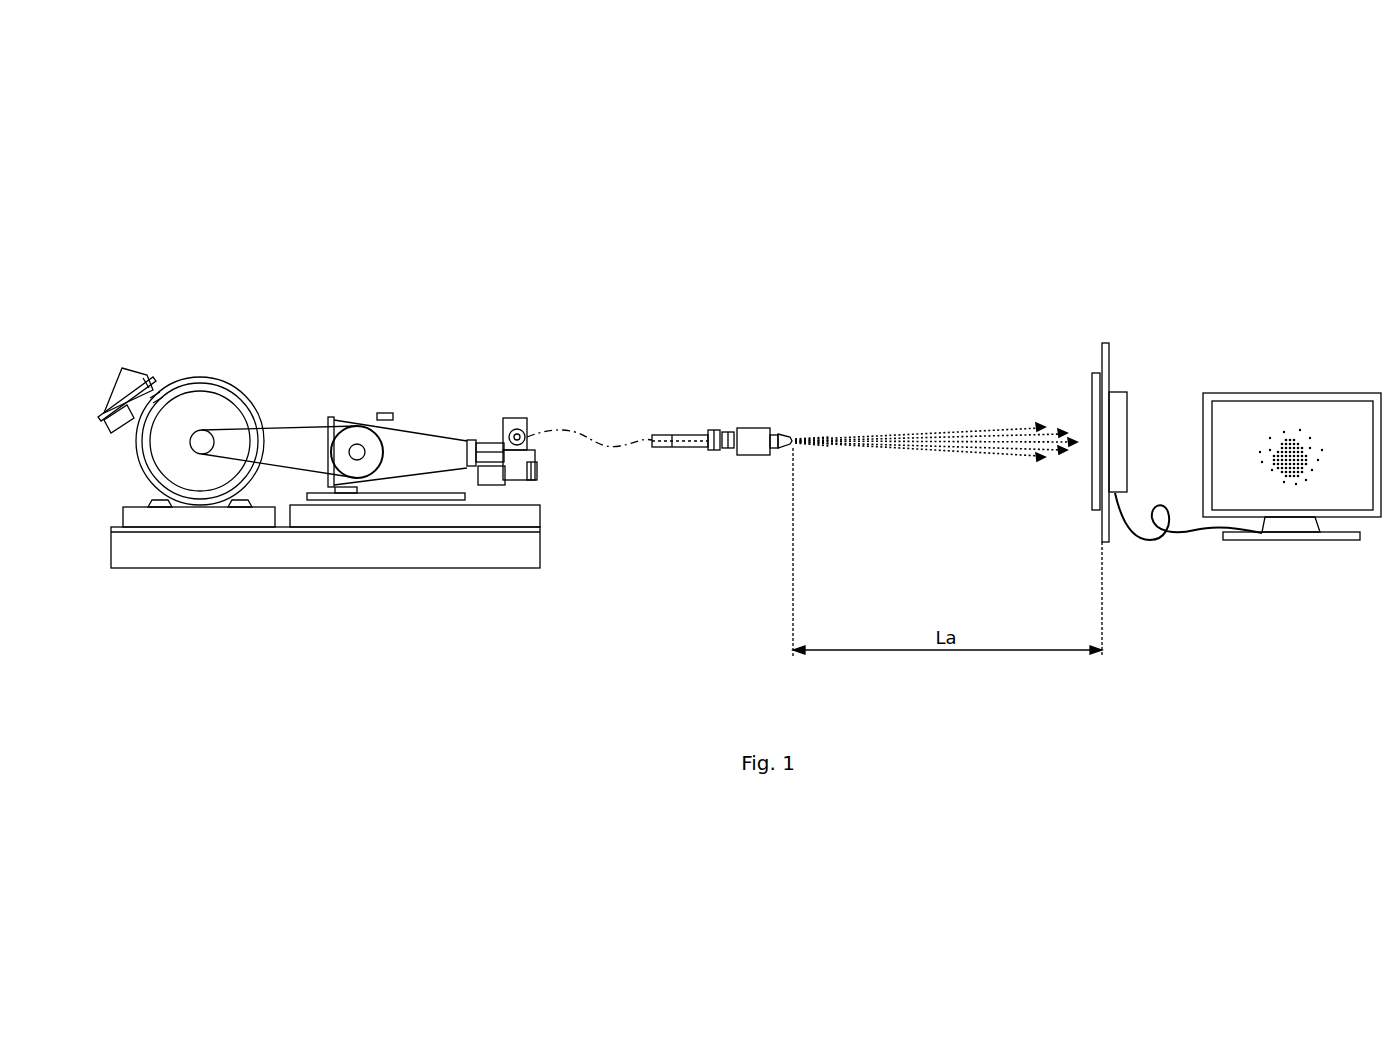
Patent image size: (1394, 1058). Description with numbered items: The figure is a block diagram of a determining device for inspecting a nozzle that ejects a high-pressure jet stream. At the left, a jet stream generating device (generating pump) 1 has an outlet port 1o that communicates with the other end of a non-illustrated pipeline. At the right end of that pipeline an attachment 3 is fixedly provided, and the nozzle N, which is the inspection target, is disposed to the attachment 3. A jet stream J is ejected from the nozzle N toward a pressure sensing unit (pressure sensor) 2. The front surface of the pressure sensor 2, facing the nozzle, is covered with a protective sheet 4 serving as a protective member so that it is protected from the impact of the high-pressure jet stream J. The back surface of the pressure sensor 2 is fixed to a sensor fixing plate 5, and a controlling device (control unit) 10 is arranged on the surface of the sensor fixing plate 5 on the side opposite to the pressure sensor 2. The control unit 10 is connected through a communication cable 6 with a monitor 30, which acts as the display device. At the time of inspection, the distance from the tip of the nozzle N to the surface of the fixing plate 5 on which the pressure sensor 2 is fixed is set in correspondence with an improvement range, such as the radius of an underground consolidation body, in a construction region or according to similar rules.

The jet stream generating device 1 is at (318, 388).
The outlet port 1o is at (521, 418).
The attachment 3 is at (715, 426).
The nozzle N is at (755, 427).
The jet stream J is at (960, 450).
The pressure sensing unit 2 is at (1094, 386).
The protective sheet 4 is at (1090, 388).
The sensor fixing plate 5 is at (1106, 343).
The controlling device 10 is at (1136, 368).
The communication cable 6 is at (1195, 540).
The monitor 30 is at (1297, 393).